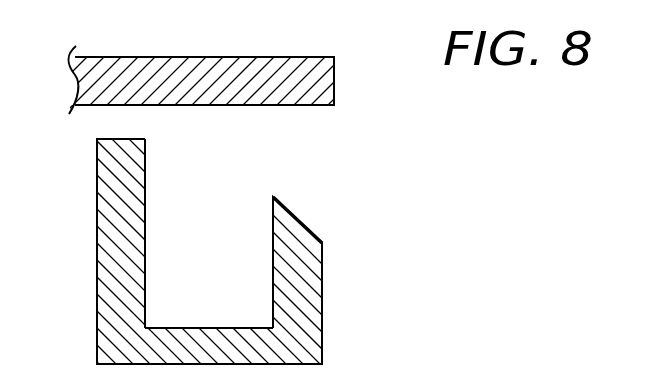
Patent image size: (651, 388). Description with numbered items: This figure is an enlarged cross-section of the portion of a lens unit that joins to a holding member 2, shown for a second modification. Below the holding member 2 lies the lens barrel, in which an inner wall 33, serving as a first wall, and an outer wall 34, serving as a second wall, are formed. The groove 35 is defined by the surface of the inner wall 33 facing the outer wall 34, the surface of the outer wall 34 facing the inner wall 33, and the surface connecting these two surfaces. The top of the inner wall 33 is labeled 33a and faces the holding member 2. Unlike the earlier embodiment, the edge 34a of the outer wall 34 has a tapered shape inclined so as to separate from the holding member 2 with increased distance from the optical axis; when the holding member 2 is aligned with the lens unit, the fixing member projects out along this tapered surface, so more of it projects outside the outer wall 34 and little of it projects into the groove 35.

The holding member 2 is at (203, 57).
The inner wall 33 is at (102, 256).
The top surface of first wall portion 33a is at (119, 138).
The outer wall 34 is at (312, 297).
The edge of the outer wall 34a is at (300, 221).
The groove 35 is at (203, 328).